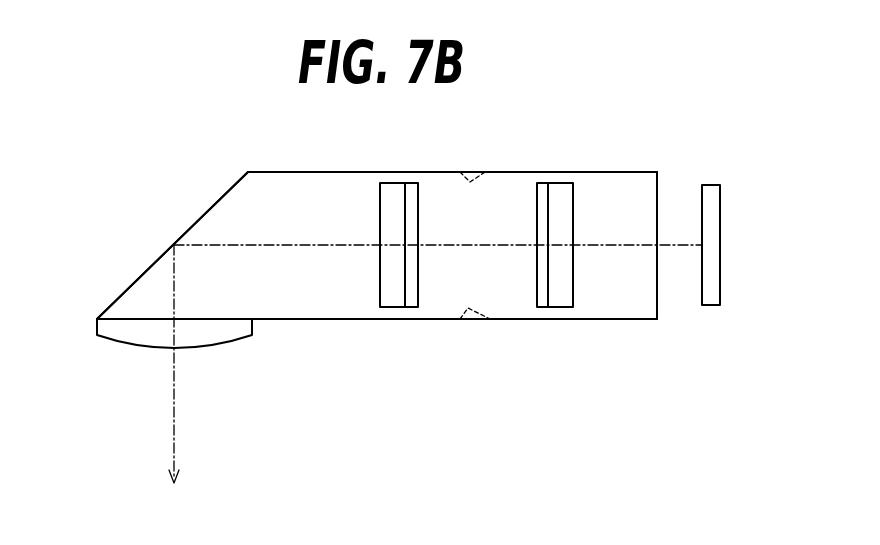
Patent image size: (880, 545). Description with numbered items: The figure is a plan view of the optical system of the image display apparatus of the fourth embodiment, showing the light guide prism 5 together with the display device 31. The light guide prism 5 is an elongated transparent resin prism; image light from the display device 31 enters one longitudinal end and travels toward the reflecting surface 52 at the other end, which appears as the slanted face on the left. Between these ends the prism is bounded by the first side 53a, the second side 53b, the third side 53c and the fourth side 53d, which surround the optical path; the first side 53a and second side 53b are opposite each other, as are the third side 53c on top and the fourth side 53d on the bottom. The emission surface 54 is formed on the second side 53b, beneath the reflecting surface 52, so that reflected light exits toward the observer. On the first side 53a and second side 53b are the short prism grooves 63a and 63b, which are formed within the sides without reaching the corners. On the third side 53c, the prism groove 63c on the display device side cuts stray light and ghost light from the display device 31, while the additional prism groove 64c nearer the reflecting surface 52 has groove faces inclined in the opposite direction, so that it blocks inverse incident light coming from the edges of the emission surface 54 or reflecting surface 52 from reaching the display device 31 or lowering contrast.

The light guide prism 5 is at (558, 340).
The display device 31 is at (720, 215).
The reflecting surface 52 is at (200, 218).
The first side 53a is at (338, 170).
The second side 53b is at (367, 320).
The third side 53c is at (295, 218).
The fourth side 53d is at (300, 277).
The emission surface 54 is at (125, 343).
The prism groove 63a is at (468, 170).
The prism groove 63b is at (468, 320).
The prism groove 63c is at (555, 207).
The prism groove 64c is at (393, 200).